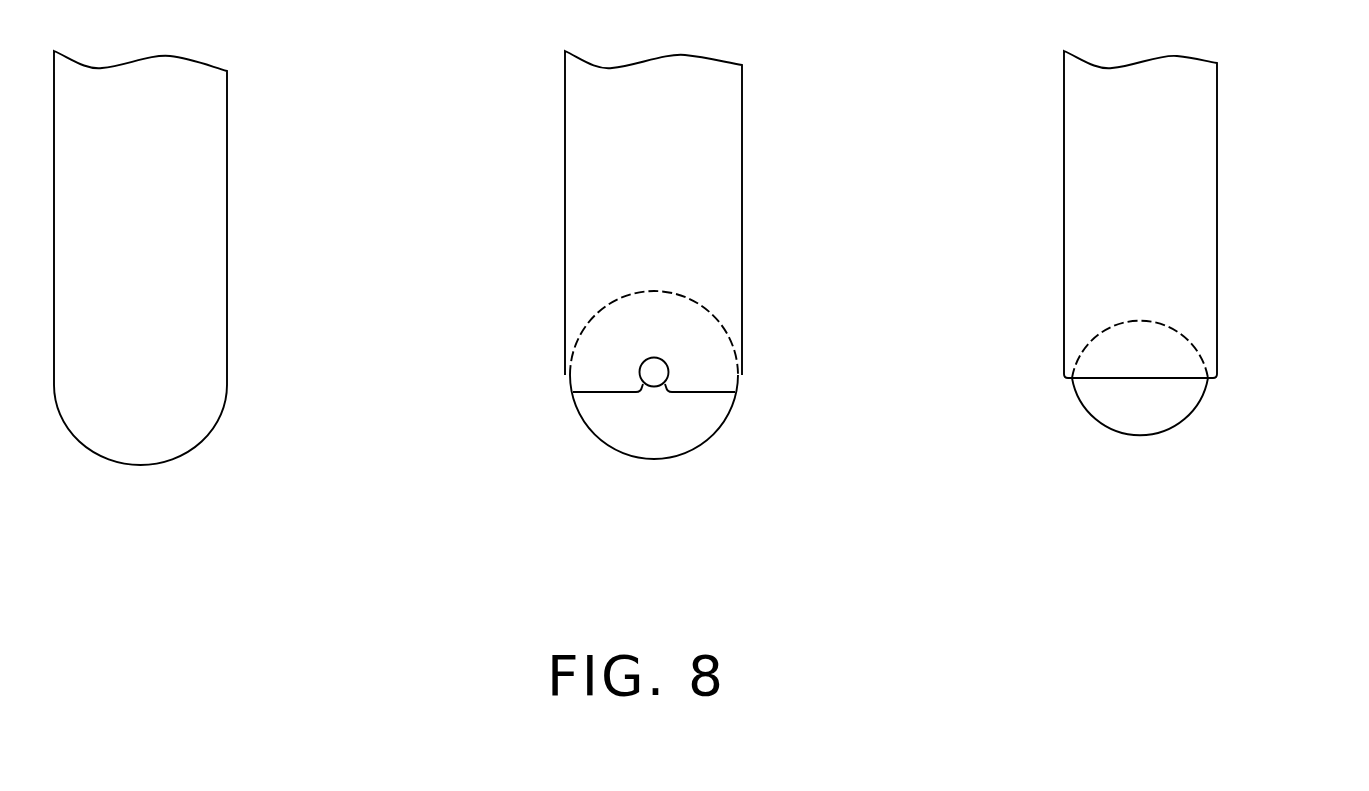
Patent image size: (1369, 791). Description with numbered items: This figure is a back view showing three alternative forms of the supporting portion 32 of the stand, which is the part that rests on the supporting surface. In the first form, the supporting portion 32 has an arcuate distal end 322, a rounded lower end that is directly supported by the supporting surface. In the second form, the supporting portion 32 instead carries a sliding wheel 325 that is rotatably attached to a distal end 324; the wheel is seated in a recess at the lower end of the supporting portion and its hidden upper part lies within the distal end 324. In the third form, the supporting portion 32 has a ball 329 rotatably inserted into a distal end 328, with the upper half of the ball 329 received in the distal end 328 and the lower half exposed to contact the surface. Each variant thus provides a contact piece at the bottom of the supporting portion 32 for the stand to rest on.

The supporting portion 32 is at (179, 160).
The arcuate distal end 322 is at (160, 407).
The distal end 324 is at (722, 307).
The sliding wheel 325 is at (683, 417).
The distal end 328 is at (1202, 328).
The ball 329 is at (1150, 405).